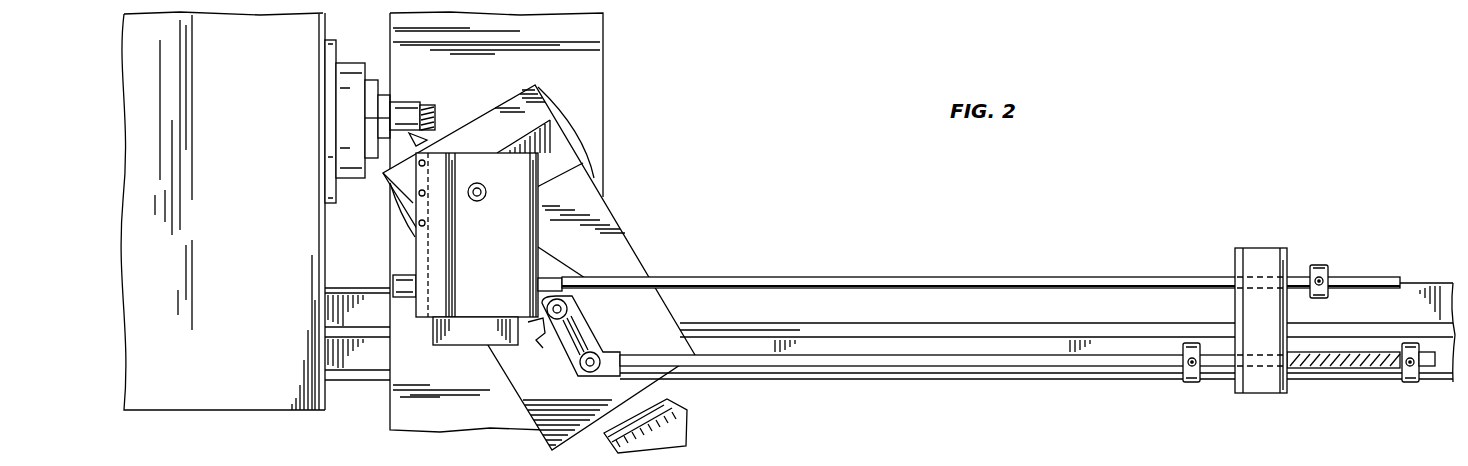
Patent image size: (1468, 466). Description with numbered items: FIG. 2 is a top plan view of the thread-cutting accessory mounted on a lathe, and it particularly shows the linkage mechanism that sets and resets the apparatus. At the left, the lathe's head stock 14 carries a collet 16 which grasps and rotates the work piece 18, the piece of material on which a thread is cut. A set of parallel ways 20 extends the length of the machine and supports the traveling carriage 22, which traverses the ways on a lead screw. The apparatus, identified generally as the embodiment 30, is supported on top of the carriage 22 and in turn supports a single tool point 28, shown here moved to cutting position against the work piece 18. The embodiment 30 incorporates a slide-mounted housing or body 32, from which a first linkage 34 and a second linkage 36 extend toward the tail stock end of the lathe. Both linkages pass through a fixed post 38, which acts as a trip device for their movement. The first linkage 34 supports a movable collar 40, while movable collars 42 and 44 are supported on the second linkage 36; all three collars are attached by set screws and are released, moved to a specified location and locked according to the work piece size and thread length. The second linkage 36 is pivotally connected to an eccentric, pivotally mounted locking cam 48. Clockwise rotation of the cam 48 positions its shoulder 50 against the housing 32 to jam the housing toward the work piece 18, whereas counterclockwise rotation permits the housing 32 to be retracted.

The head stock 14 is at (259, 162).
The collet 16 is at (356, 62).
The work piece 18 is at (436, 112).
The parallel ways 20 is at (1097, 345).
The traveling carriage 22 is at (605, 94).
The tool point 28 is at (408, 133).
The apparatus embodiment 30 is at (743, 207).
The slide-mounted housing 32 is at (501, 257).
The first linkage 34 is at (864, 282).
The second linkage 36 is at (922, 362).
The fixed post 38 is at (1261, 248).
The movable collar 40 is at (1322, 265).
The movable collar 42 is at (1192, 382).
The movable collar 44 is at (1411, 382).
The locking cam 48 is at (598, 335).
The shoulder 50 is at (541, 333).